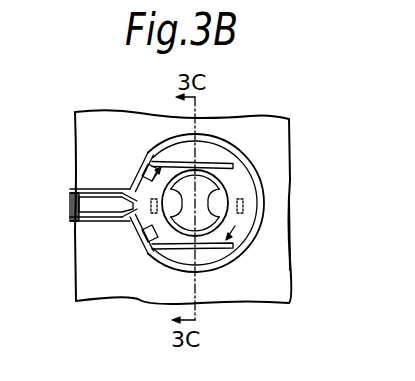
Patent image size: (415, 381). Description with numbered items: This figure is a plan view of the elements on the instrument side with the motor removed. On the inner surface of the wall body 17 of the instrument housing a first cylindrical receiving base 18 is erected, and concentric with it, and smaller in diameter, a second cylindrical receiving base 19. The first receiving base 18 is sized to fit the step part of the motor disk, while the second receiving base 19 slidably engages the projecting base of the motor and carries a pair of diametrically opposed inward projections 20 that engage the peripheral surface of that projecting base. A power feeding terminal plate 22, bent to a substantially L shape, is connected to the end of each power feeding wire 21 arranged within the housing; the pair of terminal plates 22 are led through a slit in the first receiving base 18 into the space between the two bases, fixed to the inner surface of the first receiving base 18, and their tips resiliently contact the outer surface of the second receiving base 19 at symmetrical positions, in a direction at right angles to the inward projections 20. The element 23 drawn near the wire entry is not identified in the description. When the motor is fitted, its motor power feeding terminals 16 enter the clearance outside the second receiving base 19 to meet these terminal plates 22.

The motor power feeding terminal 16 is at (243, 207).
The wall body 17 is at (287, 236).
The first cylindrical receiving base 18 is at (286, 178).
The second cylindrical receiving base 19 is at (136, 247).
The inward projection 20 is at (143, 183).
The power feeding wire 21 is at (70, 206).
The power feeding terminal plate 22 is at (223, 165).
The inlet conduit 23 is at (100, 208).